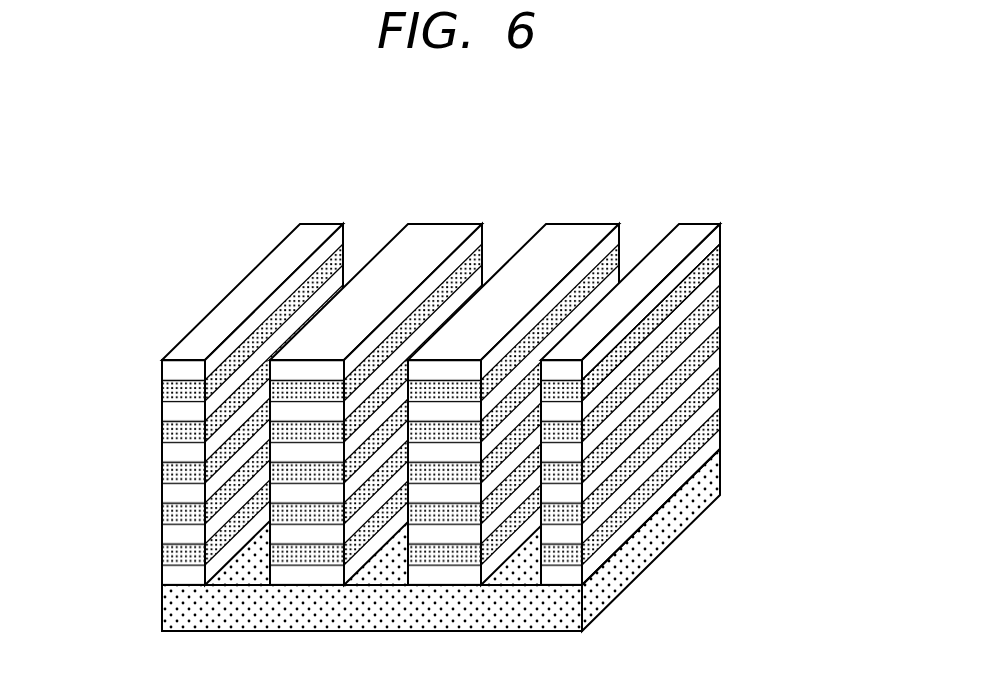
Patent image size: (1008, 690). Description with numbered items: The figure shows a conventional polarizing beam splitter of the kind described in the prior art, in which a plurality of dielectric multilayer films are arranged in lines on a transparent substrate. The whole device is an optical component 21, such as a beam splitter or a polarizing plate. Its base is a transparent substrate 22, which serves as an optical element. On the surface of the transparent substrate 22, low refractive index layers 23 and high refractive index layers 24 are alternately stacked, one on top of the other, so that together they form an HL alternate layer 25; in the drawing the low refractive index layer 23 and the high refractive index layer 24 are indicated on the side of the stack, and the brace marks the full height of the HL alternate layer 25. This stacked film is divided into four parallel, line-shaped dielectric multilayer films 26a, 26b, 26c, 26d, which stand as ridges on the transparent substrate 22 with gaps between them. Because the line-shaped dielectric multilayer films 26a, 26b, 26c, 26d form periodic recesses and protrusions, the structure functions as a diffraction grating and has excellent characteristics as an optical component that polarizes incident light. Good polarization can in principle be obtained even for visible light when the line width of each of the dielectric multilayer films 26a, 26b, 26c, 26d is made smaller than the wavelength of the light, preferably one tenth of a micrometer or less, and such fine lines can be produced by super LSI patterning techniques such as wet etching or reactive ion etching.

The optical component 21 is at (460, 382).
The transparent substrate 22 is at (703, 488).
The low refractive index layer 23 is at (712, 268).
The high refractive index layer 24 is at (712, 241).
The HL alternate layer 25 is at (811, 222).
The dielectric multilayer film 26a is at (322, 232).
The dielectric multilayer film 26b is at (443, 232).
The dielectric multilayer film 26c is at (585, 232).
The dielectric multilayer film 26d is at (700, 230).